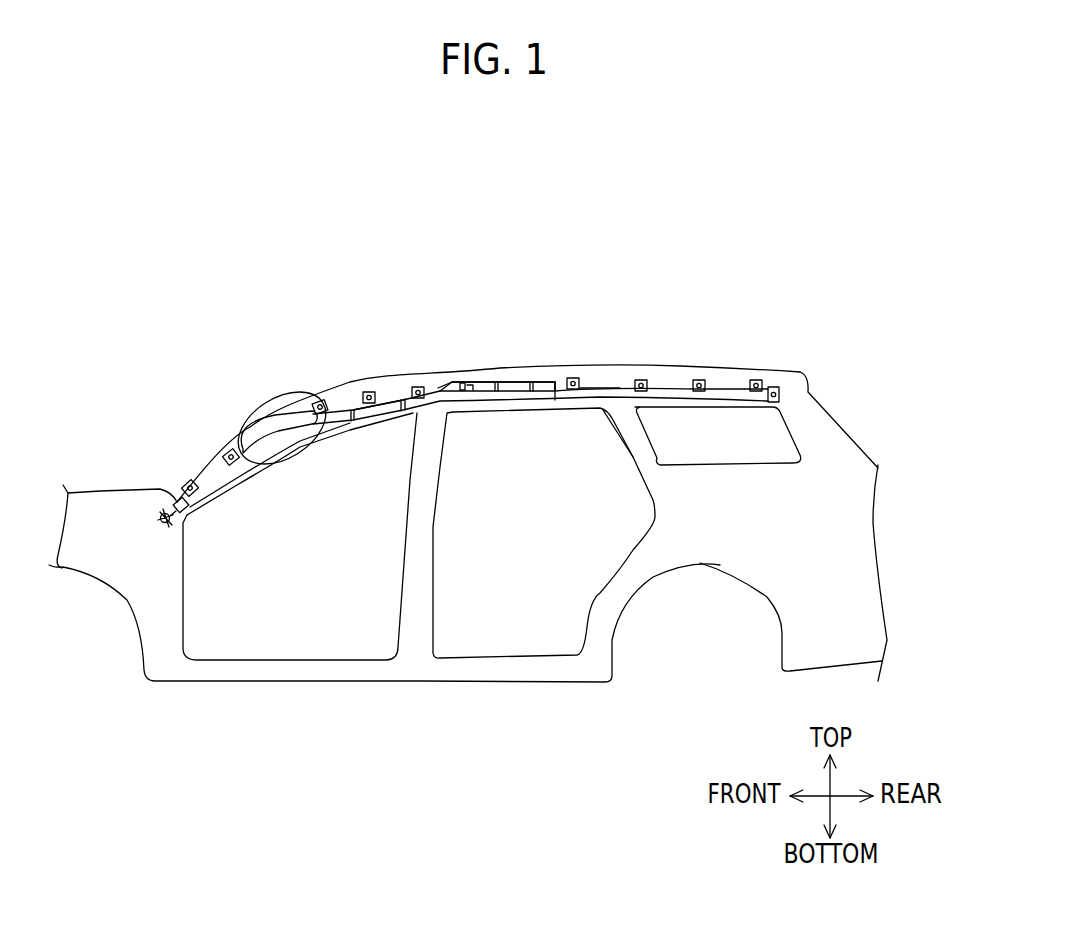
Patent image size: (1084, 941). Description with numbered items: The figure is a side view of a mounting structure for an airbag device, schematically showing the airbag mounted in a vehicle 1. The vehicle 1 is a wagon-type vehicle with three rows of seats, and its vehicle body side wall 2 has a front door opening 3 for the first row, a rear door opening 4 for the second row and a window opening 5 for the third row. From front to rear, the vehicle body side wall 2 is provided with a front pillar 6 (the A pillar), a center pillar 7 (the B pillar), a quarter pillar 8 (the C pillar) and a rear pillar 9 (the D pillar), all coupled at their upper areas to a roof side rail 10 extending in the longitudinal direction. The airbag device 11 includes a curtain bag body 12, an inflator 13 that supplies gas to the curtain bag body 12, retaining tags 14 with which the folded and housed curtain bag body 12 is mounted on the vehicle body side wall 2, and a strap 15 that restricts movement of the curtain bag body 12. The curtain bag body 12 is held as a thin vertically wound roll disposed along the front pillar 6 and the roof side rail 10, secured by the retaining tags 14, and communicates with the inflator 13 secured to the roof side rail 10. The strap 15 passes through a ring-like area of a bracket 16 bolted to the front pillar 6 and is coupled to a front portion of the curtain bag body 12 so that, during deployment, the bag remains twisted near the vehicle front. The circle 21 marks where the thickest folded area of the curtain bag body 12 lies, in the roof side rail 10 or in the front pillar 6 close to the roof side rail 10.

The vehicle 1 is at (529, 269).
The vehicle body side wall 2 is at (417, 685).
The front door opening 3 is at (283, 558).
The rear door opening 4 is at (508, 522).
The window opening 5 is at (707, 452).
The front pillar 6 is at (213, 457).
The center pillar 7 is at (437, 390).
The quarter pillar 8 is at (627, 430).
The rear pillar 9 is at (823, 444).
The roof side rail 10 is at (597, 378).
The airbag device 11 is at (389, 398).
The curtain bag body 12 is at (562, 390).
The inflator 13 is at (518, 381).
The retaining tags 14 is at (320, 398).
The strap 15 is at (175, 502).
The bracket 16 is at (163, 512).
The circle 21 is at (290, 390).